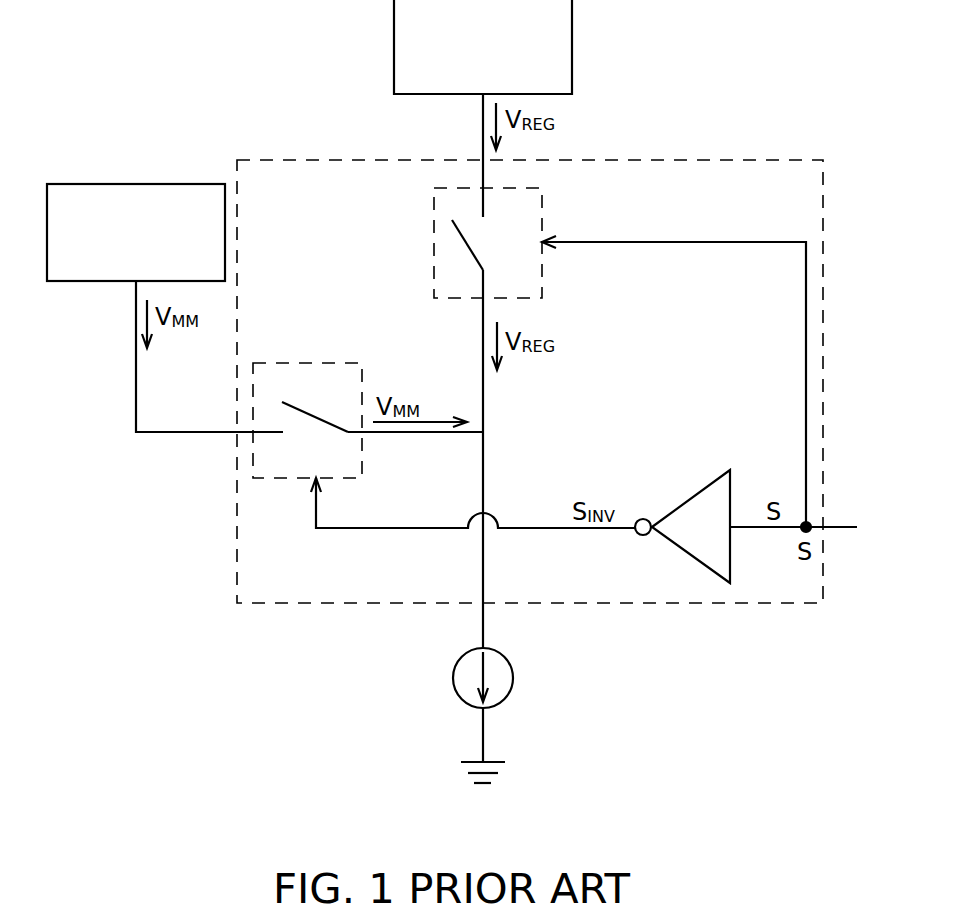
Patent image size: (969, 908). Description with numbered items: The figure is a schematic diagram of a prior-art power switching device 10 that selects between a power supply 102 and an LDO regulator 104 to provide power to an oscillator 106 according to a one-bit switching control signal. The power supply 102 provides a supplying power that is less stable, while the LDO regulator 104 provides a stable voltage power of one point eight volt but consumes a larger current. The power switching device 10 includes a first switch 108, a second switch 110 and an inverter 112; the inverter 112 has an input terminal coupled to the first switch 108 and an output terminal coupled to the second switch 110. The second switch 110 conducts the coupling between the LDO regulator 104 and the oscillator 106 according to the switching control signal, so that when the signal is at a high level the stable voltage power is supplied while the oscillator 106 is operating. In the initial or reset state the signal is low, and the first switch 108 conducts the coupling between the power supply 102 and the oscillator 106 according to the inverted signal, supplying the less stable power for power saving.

The power switching device 10 is at (337, 160).
The power supply 102 is at (134, 183).
The LDO regulator 104 is at (572, 50).
The oscillator 106 is at (452, 678).
The first switch 108 is at (308, 362).
The second switch 110 is at (434, 243).
The inverter 112 is at (690, 497).